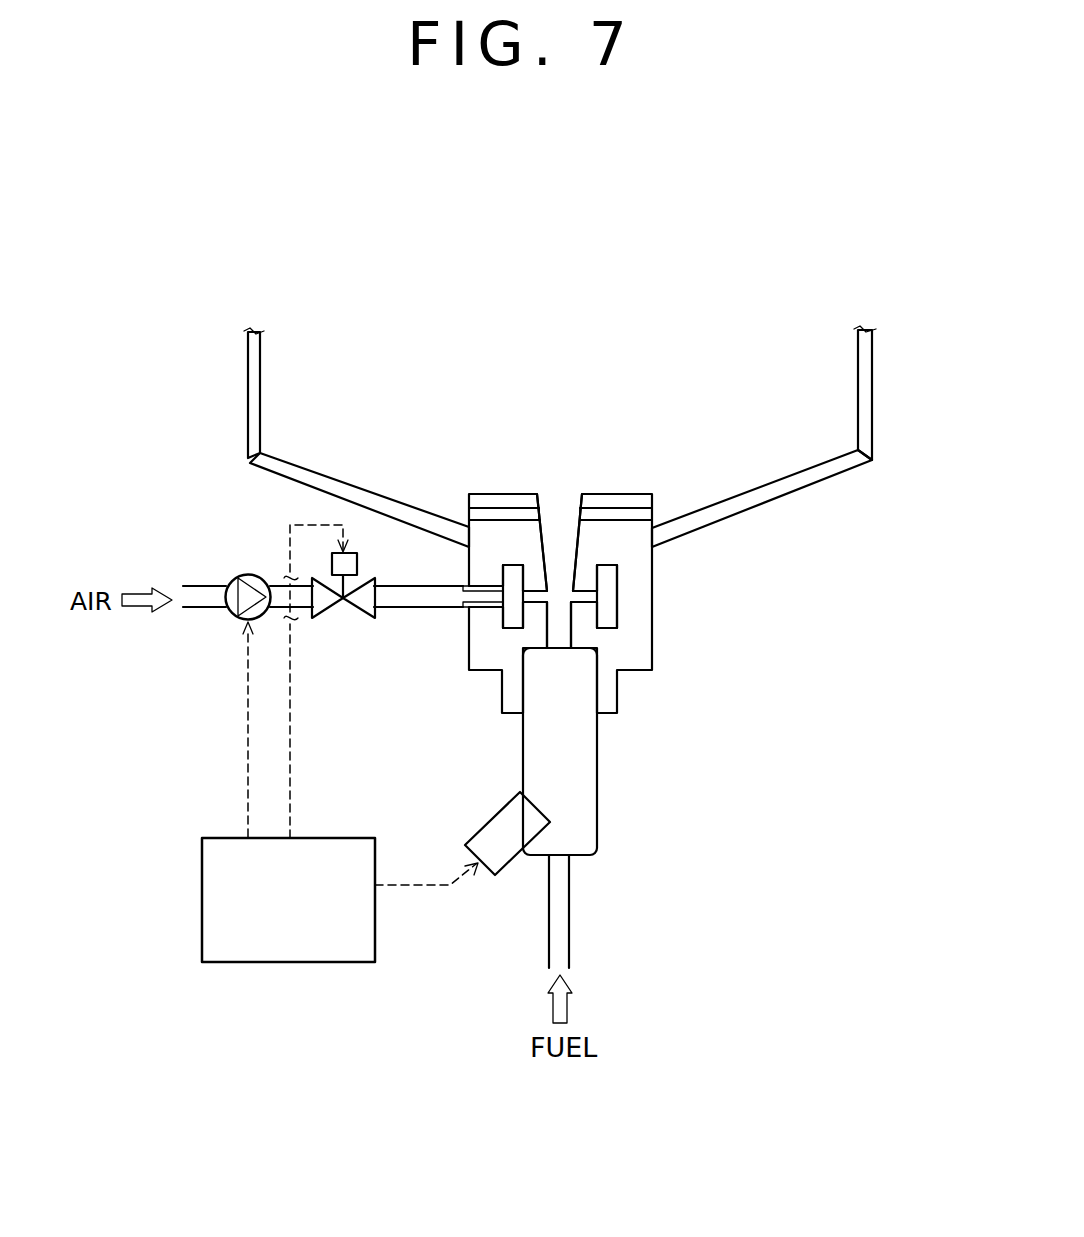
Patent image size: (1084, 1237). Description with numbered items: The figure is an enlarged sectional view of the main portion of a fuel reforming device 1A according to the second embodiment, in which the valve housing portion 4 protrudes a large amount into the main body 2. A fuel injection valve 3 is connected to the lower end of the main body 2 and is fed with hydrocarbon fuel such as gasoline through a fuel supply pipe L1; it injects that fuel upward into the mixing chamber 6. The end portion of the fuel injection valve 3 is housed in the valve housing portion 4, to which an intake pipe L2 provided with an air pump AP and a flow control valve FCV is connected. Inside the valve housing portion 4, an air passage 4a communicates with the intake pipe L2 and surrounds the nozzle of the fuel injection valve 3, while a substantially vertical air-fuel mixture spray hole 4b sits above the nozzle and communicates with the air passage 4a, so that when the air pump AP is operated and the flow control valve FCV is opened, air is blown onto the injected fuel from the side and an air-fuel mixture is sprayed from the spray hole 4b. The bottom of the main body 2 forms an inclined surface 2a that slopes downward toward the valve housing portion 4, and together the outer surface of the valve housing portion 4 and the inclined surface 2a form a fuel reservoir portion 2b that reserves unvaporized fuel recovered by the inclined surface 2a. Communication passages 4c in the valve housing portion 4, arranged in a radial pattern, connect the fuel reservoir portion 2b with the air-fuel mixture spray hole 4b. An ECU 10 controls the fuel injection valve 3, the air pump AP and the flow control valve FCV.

The fuel reforming device 1A is at (765, 340).
The main body 2 is at (872, 397).
The inclined surface 2a is at (337, 483).
The fuel reservoir portion 2b is at (700, 522).
The fuel injection valve 3 is at (588, 797).
The valve housing portion 4 is at (480, 666).
The air passage 4a is at (598, 597).
The air-fuel mixture spray hole 4b is at (552, 510).
The communication passage 4c is at (468, 515).
The mixing chamber 6 is at (572, 375).
The ECU 10 is at (202, 895).
The air pump AP is at (248, 575).
The flow control valve FCV is at (358, 618).
The fuel supply pipe L1 is at (548, 940).
The intake pipe L2 is at (430, 610).